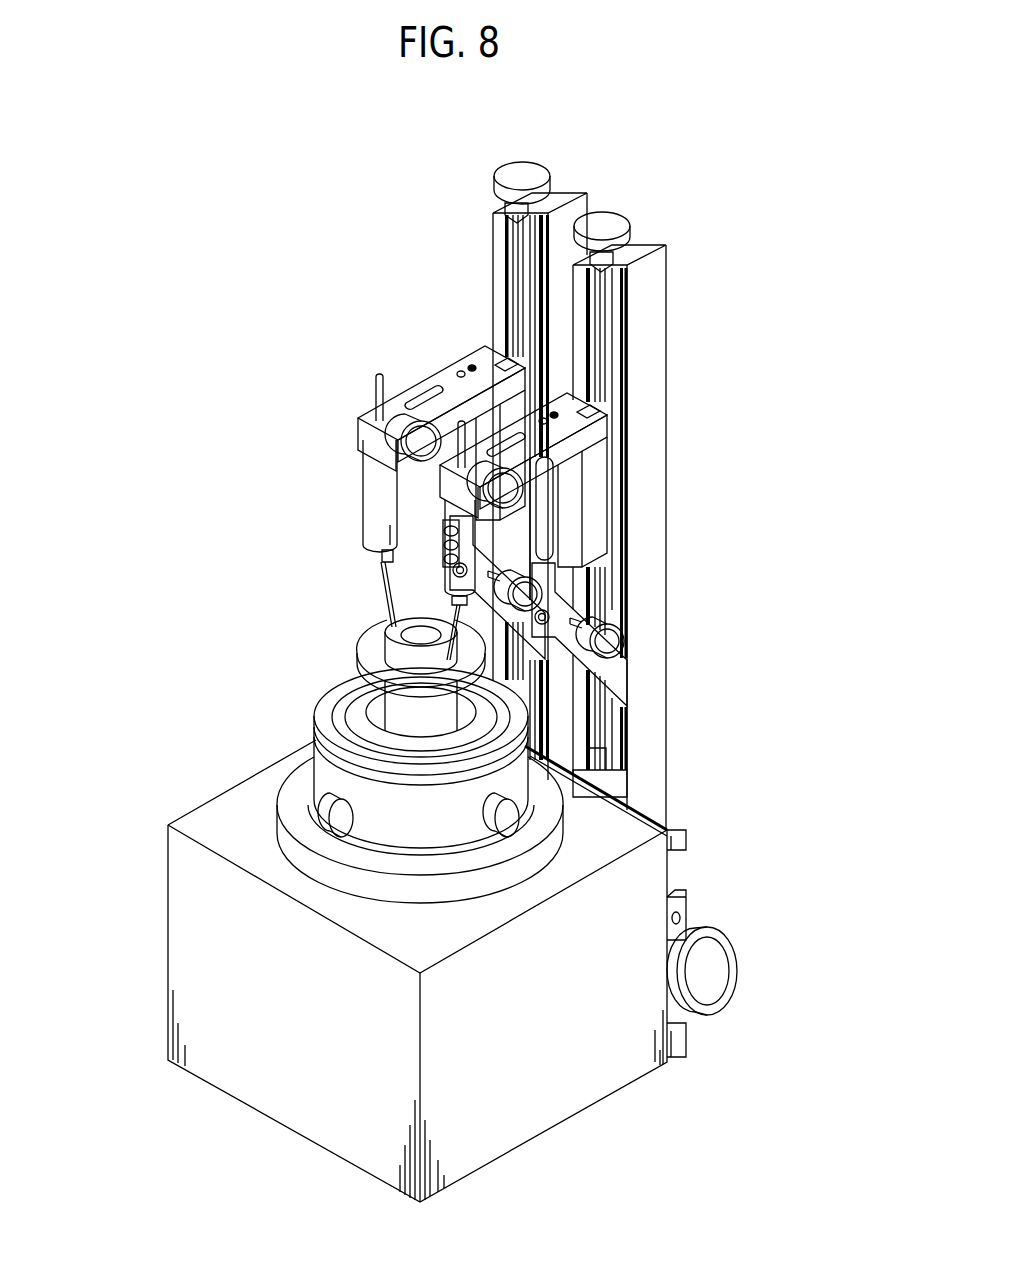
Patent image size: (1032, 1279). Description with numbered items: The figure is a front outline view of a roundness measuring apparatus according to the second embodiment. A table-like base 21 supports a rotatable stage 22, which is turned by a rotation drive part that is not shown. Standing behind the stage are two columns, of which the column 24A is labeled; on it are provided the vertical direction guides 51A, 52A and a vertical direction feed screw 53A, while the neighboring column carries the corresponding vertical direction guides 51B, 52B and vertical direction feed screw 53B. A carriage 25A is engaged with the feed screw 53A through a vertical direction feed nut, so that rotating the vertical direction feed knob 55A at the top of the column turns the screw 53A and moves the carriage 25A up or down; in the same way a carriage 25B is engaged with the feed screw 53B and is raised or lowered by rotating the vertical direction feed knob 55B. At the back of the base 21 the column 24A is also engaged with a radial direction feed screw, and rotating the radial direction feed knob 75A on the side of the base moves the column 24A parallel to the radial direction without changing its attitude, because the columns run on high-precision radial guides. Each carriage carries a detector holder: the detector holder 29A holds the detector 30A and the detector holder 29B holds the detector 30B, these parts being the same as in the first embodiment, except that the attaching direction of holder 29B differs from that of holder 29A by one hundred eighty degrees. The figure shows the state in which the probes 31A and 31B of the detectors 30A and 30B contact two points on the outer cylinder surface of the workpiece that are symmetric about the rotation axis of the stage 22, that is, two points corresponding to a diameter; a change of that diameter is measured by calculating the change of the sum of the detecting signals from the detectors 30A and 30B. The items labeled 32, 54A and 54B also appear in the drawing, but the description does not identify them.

The base 21 is at (168, 940).
The stage 22 is at (313, 698).
The column 24A is at (667, 347).
The carriage 25A is at (607, 683).
The carriage 25B is at (383, 578).
The detector holder 29A is at (595, 510).
The detector holder 29B is at (478, 365).
The detector 30A is at (403, 552).
The detector 30B is at (365, 470).
The probe 31A is at (448, 604).
The probe 31B is at (383, 590).
The workpiece spindle hub 32 is at (352, 644).
The vertical direction guide 51A is at (580, 303).
The vertical direction guide 51B is at (535, 260).
The vertical direction guide 52A is at (617, 323).
The vertical direction guide 52B is at (500, 288).
The vertical direction feed screw 53A is at (603, 367).
The vertical direction feed screw 53B is at (518, 333).
The clamp knob 54A is at (614, 640).
The clamp knob 54B is at (500, 592).
The vertical direction feed knob 55A is at (607, 222).
The vertical direction feed knob 55B is at (512, 176).
The radial direction feed knob 75A is at (737, 960).